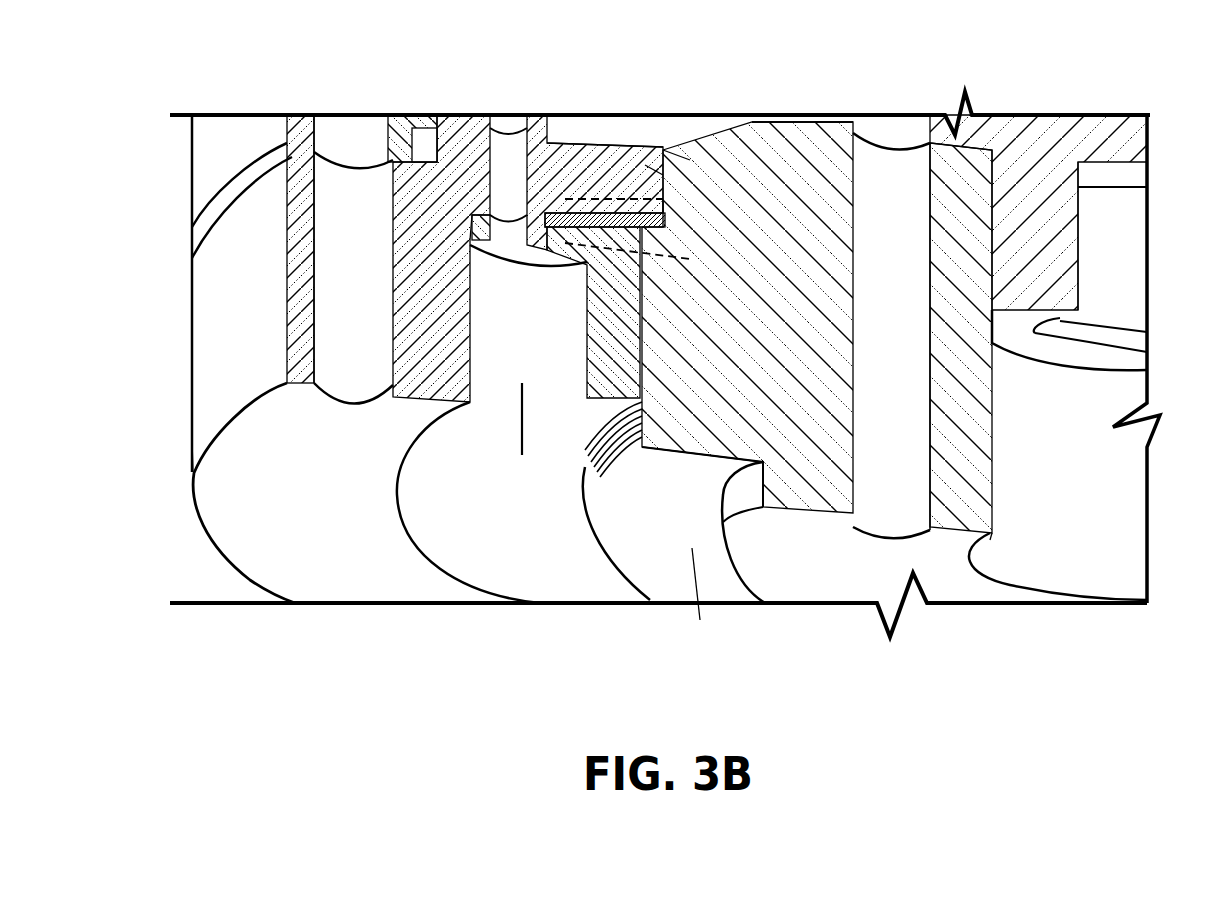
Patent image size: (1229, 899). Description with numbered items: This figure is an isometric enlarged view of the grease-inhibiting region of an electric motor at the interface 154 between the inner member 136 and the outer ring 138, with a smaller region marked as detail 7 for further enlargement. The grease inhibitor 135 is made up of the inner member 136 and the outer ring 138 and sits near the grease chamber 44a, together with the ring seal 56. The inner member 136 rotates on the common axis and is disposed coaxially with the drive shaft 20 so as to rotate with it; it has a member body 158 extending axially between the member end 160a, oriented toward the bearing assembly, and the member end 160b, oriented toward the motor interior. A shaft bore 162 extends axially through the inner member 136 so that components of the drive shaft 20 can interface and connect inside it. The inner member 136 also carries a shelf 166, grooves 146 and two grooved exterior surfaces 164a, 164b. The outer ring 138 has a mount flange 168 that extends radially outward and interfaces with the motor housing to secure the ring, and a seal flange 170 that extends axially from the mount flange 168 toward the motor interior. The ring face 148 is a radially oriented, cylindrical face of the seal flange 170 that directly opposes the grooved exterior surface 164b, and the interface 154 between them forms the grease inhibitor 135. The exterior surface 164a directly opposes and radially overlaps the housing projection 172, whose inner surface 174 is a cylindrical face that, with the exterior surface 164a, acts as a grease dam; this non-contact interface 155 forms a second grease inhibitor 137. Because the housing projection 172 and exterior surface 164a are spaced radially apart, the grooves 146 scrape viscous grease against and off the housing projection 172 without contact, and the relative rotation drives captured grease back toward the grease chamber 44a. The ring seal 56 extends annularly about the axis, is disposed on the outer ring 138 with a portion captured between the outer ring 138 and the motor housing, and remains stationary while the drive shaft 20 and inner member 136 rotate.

The detail 7 is at (577, 193).
The drive shaft 20 is at (1045, 170).
The grease chamber 44a is at (560, 145).
The ring seal 56 is at (600, 195).
The grease inhibitor 135 is at (660, 362).
The inner member 136 is at (813, 440).
The second grease inhibitor 137 is at (738, 185).
The outer ring 138 is at (545, 376).
The grooves 146 is at (643, 447).
The ring face 148 is at (597, 382).
The interface 154 is at (730, 355).
The interface 155 is at (655, 170).
The member body 158 is at (827, 245).
The member end 160a is at (735, 172).
The member end 160b is at (692, 548).
The shaft bore 162 is at (980, 510).
The exterior surface 164a is at (675, 160).
The exterior surface 164b is at (583, 467).
The shelf 166 is at (665, 225).
The mount flange 168 is at (433, 157).
The seal flange 170 is at (600, 312).
The housing projection 172 is at (600, 165).
The inner surface 174 is at (668, 205).